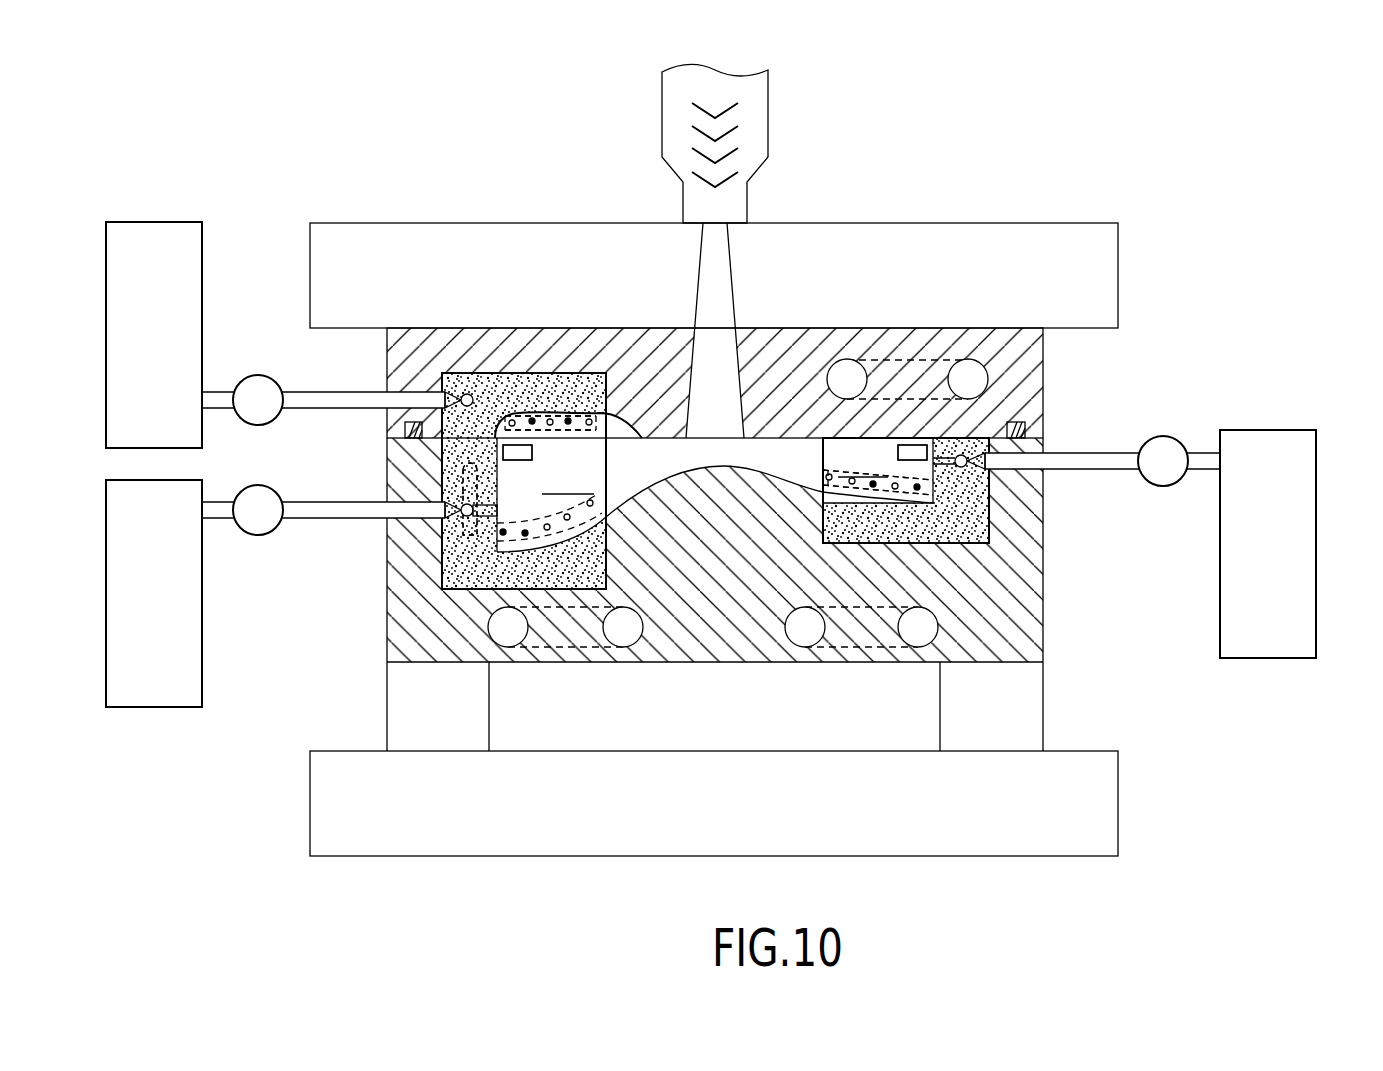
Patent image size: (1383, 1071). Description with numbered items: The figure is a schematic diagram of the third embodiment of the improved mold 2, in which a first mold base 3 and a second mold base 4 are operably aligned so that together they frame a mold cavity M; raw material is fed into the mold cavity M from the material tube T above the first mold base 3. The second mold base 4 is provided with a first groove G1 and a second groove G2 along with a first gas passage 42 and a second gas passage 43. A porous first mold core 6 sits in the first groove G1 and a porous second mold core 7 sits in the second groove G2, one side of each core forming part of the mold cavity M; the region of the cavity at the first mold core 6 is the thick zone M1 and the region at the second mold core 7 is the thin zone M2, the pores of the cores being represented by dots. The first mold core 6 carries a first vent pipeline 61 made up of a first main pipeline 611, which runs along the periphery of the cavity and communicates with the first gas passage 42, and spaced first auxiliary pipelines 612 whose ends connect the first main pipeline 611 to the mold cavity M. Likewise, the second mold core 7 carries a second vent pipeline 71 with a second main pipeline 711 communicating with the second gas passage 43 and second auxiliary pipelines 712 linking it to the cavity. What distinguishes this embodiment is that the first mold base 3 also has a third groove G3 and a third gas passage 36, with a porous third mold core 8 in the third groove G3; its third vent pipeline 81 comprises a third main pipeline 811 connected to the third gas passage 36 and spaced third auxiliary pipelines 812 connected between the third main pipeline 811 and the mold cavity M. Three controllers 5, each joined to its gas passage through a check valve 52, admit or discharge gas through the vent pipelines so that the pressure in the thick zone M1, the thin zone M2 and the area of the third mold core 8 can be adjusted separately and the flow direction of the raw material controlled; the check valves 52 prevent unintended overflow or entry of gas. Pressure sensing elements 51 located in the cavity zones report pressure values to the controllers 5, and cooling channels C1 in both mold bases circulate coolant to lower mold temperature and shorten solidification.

The mold 2 is at (133, 125).
The first mold base 3 is at (413, 347).
The third gas passage 36 is at (413, 400).
The second mold base 4 is at (453, 642).
The first gas passage 42 is at (412, 520).
The second gas passage 43 is at (1005, 462).
The controller 5 is at (106, 300).
The pressure sensing element 51 is at (503, 452).
The check valve 52 is at (236, 500).
The first mold core 6 is at (552, 572).
The first vent pipeline 61 is at (288, 585).
The first main pipeline 611 is at (478, 540).
The first auxiliary pipeline 612 is at (525, 535).
The second mold core 7 is at (893, 540).
The second vent pipeline 71 is at (1143, 532).
The second main pipeline 711 is at (965, 522).
The second auxiliary pipeline 712 is at (875, 486).
The third mold core 8 is at (588, 385).
The third vent pipeline 81 is at (480, 147).
The third main pipeline 811 is at (512, 415).
The third auxiliary pipeline 812 is at (568, 420).
The material tube T is at (662, 110).
The mold cavity M is at (738, 456).
The thick zone M1 is at (548, 471).
The thin zone M2 is at (882, 458).
The cooling channel C1 is at (968, 370).
The first groove G1 is at (590, 580).
The second groove G2 is at (850, 548).
The third groove G3 is at (571, 413).